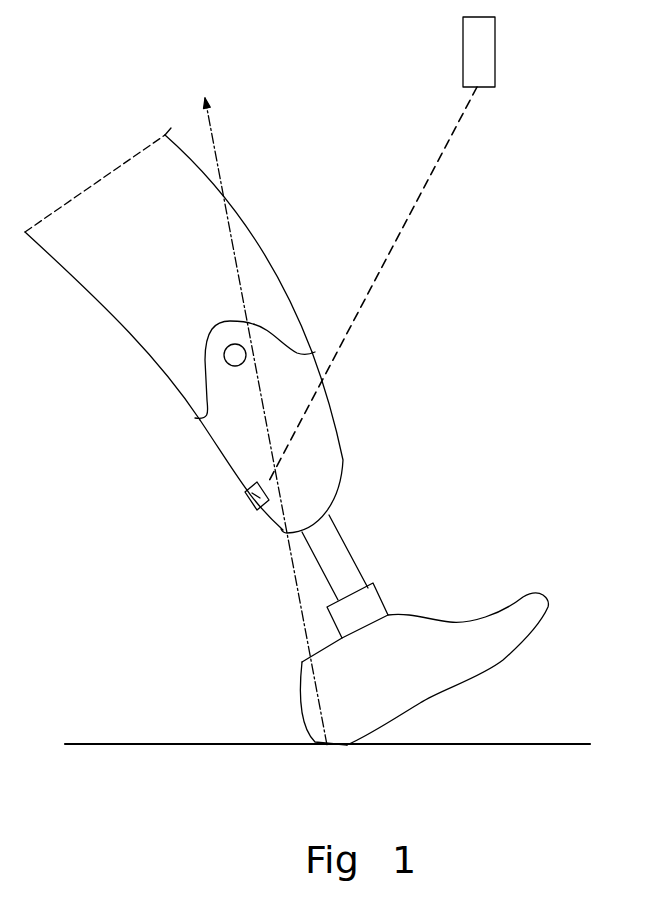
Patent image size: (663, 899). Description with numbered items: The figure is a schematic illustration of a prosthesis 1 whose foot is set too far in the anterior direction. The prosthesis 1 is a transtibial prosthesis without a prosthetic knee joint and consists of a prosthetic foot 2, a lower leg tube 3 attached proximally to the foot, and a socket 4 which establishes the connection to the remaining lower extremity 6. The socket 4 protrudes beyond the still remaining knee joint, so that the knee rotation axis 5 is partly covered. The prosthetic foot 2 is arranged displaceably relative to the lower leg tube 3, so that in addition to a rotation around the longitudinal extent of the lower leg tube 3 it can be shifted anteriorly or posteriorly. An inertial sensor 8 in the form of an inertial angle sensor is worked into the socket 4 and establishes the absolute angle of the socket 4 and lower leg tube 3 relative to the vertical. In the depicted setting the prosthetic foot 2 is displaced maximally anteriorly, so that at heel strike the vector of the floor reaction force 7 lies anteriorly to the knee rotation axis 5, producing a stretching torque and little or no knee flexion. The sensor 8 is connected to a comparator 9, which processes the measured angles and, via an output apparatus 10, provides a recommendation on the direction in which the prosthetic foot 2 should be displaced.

The prosthesis 1 is at (517, 222).
The prosthetic foot 2 is at (530, 620).
The lower leg tube 3 is at (348, 552).
The socket 4 is at (333, 411).
The knee rotation axis 5 is at (231, 356).
The remaining lower extremity 6 is at (100, 197).
The floor reaction force 7 is at (214, 142).
The inertial sensor 8 is at (246, 495).
The comparator 9 is at (480, 55).
The output apparatus 10 is at (495, 77).